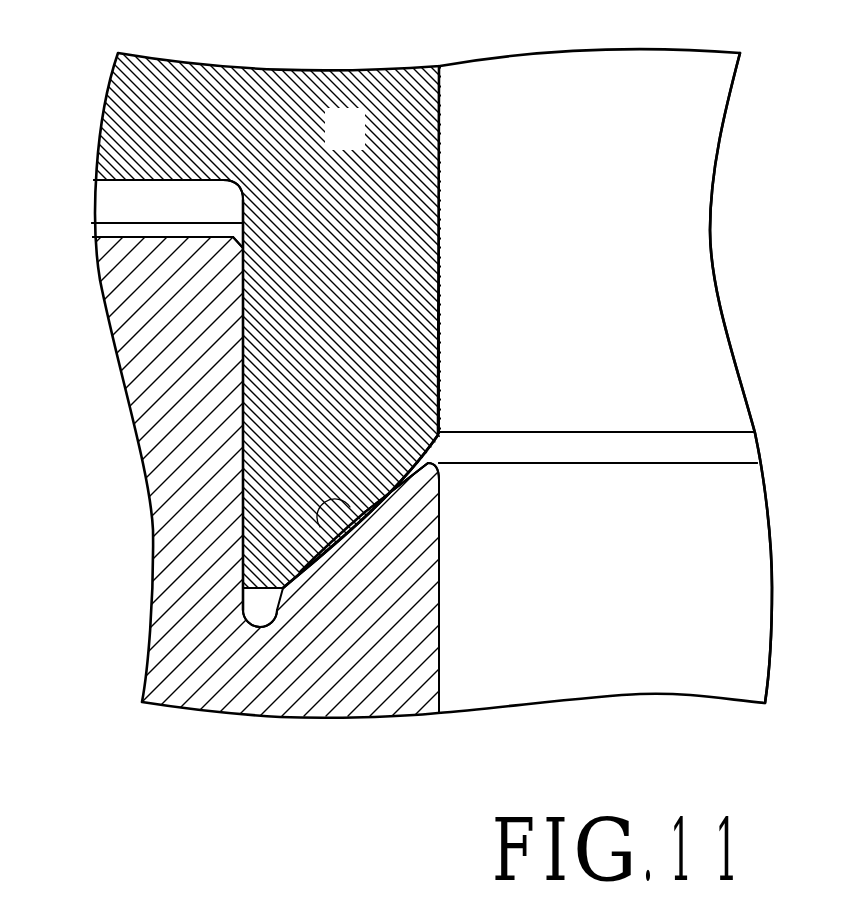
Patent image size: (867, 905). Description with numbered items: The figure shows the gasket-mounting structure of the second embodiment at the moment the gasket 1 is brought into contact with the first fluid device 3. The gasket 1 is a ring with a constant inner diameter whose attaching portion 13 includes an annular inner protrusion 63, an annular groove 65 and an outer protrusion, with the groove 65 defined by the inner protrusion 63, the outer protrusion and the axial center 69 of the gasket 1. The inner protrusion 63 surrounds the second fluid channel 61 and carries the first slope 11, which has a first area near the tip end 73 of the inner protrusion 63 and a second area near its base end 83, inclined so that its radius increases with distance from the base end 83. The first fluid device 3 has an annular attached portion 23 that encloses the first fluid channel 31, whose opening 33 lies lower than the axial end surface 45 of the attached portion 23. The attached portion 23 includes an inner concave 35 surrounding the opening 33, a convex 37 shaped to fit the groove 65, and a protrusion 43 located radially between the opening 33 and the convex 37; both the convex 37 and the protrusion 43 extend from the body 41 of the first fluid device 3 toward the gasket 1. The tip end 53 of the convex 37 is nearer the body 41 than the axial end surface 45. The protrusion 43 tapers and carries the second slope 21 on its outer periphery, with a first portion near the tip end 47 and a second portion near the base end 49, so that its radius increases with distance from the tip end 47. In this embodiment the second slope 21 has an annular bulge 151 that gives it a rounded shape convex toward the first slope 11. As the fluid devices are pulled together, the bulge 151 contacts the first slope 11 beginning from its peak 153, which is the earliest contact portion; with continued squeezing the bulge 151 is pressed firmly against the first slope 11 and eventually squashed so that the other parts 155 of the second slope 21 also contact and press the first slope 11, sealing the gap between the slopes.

The gasket 1 is at (357, 147).
The first fluid device 3 is at (205, 678).
The first slope 11 is at (434, 470).
The attaching portion 13 is at (266, 530).
The second slope 21 is at (399, 474).
The attached portion 23 is at (754, 543).
The first fluid channel 31 is at (673, 623).
The opening 33 is at (683, 462).
The inner concave 35 is at (262, 622).
The convex 37 is at (117, 223).
The body 41 is at (440, 700).
The protrusion 43 is at (430, 552).
The axial end surface 45 is at (222, 222).
The tip end 47 is at (420, 466).
The base end 49 is at (430, 632).
The tip end 53 is at (210, 237).
The second fluid channel 61 is at (606, 343).
The inner protrusion 63 is at (453, 303).
The groove 65 is at (94, 198).
The axial center 69 is at (166, 145).
The tip end 73 is at (270, 586).
The base end 83 is at (400, 182).
The bulge 151 is at (315, 547).
The peak 153 is at (360, 517).
The other parts 155 is at (381, 484).